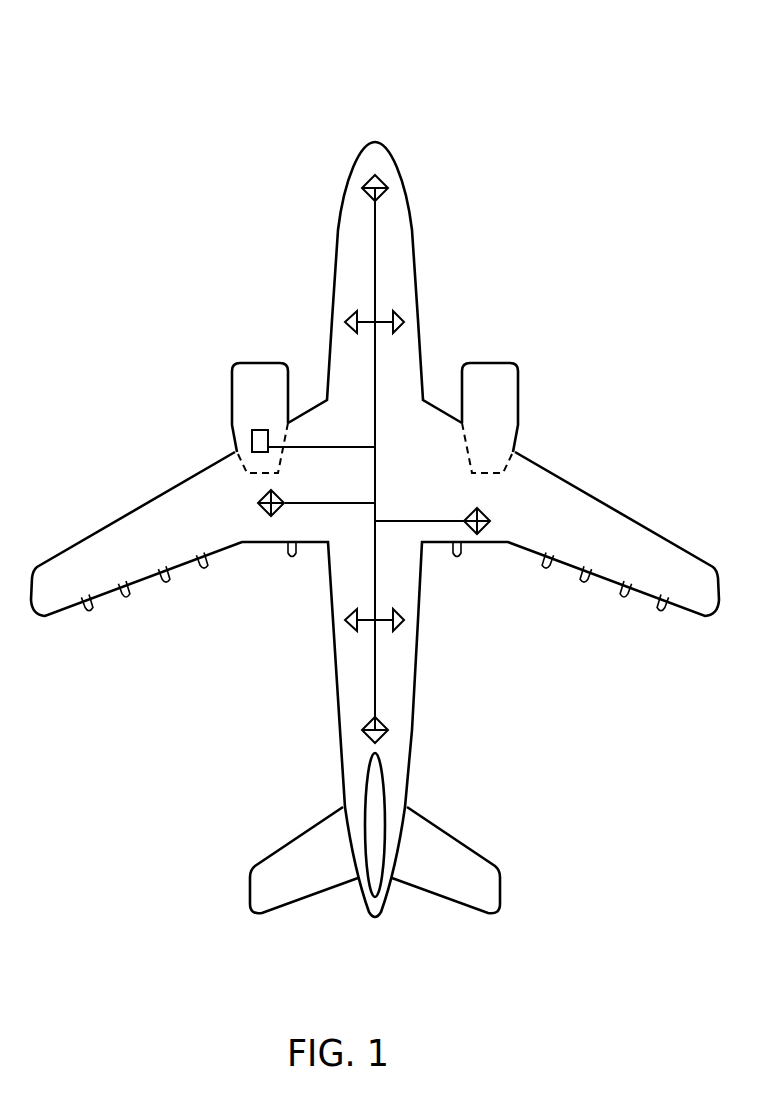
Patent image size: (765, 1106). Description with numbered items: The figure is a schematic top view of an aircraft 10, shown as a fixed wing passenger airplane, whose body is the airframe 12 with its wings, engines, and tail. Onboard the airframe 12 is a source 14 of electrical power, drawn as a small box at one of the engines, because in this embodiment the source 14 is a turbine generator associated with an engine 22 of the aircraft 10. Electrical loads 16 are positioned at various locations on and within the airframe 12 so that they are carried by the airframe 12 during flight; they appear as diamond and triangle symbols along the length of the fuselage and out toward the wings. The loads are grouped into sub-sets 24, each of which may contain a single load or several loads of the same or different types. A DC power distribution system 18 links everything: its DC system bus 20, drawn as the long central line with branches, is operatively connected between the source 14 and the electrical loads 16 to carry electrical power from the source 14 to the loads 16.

The aircraft 10 is at (487, 80).
The airframe 12 is at (415, 270).
The source of electrical power 14 is at (252, 440).
The electrical loads 16 is at (388, 187).
The DC power distribution system 18 is at (396, 370).
The DC system bus 20 is at (367, 570).
The engine 22 is at (229, 366).
The sub-sets of the electrical loads 24 is at (358, 173).